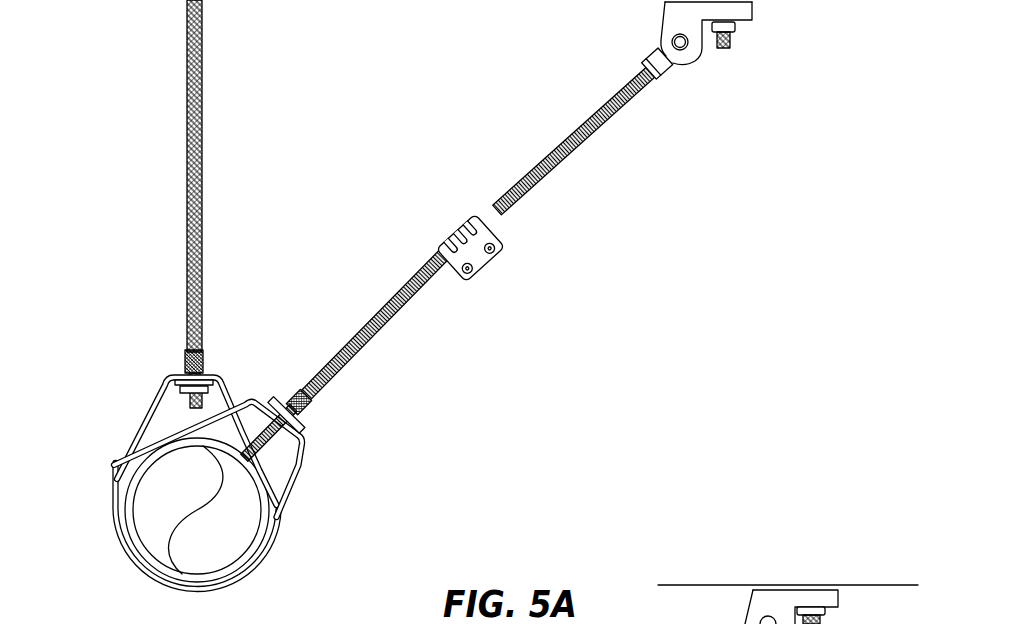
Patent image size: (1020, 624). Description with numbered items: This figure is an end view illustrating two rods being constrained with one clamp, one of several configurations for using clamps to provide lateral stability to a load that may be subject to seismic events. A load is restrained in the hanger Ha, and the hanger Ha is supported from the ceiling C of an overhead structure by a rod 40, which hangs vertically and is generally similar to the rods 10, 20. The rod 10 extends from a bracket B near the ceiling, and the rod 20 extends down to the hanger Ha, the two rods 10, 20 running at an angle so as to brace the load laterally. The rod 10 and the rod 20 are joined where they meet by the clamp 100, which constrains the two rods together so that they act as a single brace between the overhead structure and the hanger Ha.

The rod 10 is at (562, 100).
The rod 20 is at (345, 326).
The rod 40 is at (163, 108).
The clamp 100 is at (415, 208).
The beam clamp bracket B is at (690, 61).
The ceiling C is at (300, 0).
The hanger Ha is at (152, 398).